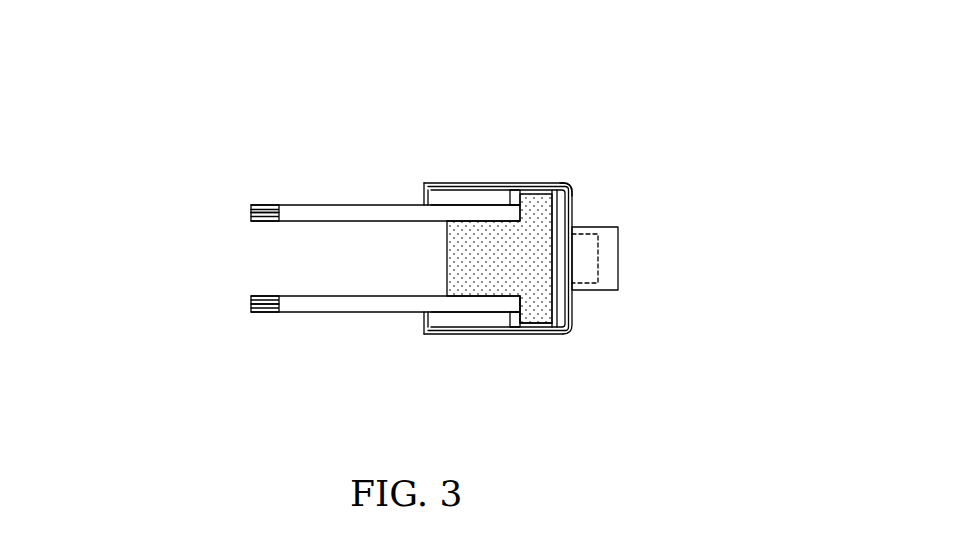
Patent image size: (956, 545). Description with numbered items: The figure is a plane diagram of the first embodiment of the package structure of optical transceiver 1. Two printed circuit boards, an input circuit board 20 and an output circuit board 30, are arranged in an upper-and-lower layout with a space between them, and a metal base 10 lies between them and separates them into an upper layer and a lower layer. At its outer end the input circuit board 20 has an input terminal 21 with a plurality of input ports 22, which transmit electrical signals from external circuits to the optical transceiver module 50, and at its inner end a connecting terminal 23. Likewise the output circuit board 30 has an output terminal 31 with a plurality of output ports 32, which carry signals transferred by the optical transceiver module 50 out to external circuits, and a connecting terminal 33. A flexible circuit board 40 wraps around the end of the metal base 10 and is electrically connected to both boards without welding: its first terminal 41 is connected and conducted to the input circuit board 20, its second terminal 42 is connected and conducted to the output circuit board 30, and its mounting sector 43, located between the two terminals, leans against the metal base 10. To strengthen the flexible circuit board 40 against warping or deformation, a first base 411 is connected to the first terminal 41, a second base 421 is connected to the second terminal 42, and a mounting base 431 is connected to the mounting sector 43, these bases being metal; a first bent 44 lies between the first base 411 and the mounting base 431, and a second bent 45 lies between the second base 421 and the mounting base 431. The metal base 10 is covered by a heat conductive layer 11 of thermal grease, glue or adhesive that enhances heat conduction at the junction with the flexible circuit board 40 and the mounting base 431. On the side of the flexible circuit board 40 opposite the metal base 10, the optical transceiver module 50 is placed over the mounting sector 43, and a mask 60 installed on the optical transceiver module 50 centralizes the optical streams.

The package structure of optical transceiver 1 is at (599, 93).
The metal base 10 is at (445, 248).
The heat conductive layer 11 is at (535, 296).
The input circuit board 20 is at (355, 181).
The input terminal 21 is at (252, 217).
The input ports 22 is at (258, 204).
The connecting terminal 23 is at (433, 204).
The output circuit board 30 is at (355, 340).
The output terminal 31 is at (252, 312).
The output ports 32 is at (252, 297).
The connecting terminal 33 is at (433, 313).
The flexible circuit board 40 is at (514, 259).
The first terminal 41 is at (464, 149).
The first base 411 is at (422, 200).
The second terminal 42 is at (464, 368).
The second base 421 is at (424, 327).
The mounting sector 43 is at (574, 212).
The mounting base 431 is at (558, 202).
The first bent 44 is at (575, 186).
The second bent 45 is at (570, 329).
The optical transceiver module 50 is at (600, 269).
The mask 60 is at (618, 241).